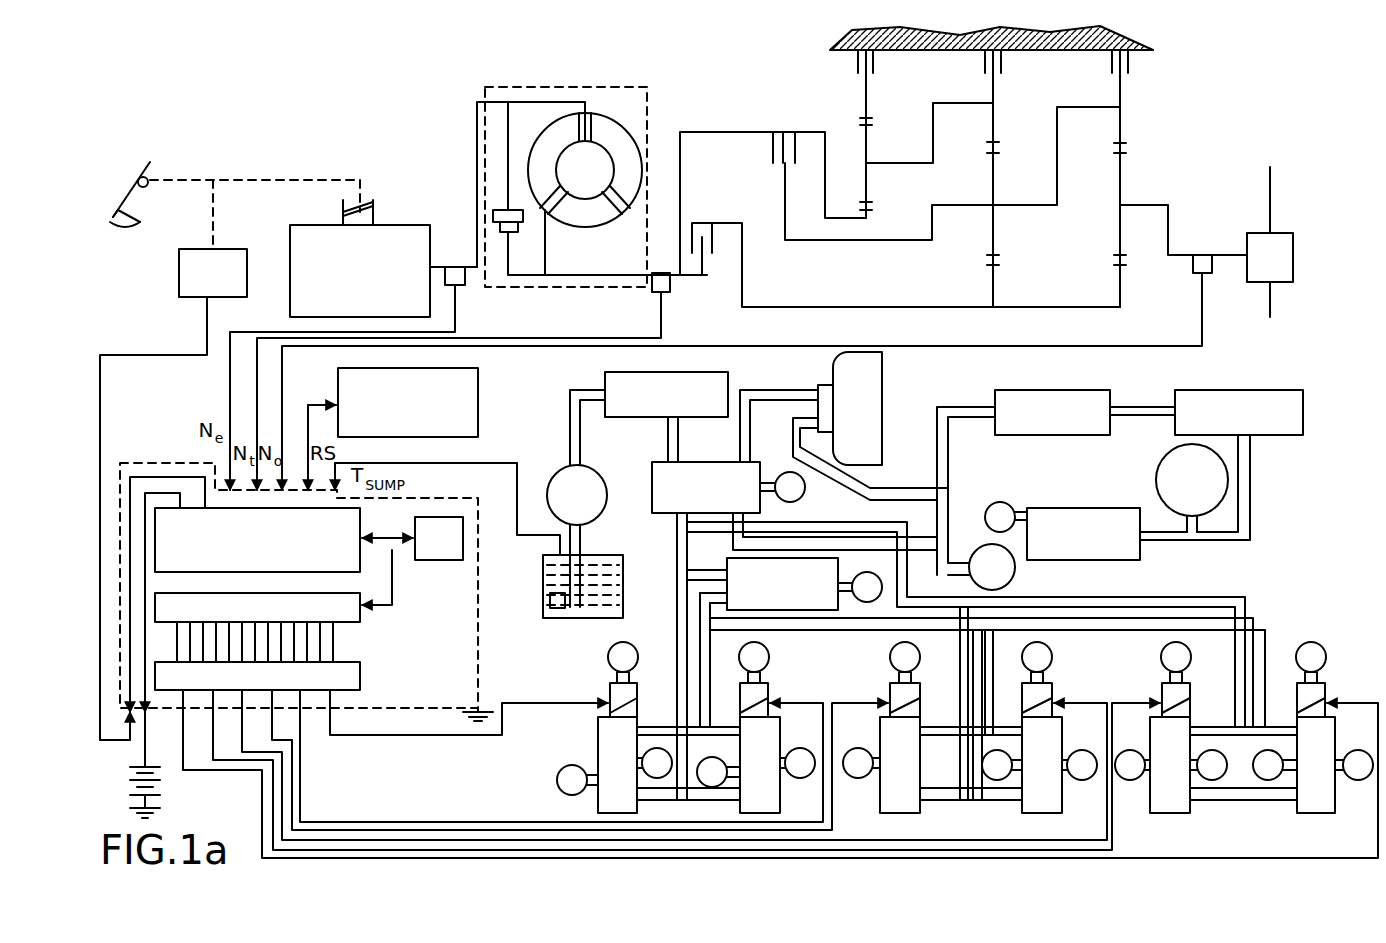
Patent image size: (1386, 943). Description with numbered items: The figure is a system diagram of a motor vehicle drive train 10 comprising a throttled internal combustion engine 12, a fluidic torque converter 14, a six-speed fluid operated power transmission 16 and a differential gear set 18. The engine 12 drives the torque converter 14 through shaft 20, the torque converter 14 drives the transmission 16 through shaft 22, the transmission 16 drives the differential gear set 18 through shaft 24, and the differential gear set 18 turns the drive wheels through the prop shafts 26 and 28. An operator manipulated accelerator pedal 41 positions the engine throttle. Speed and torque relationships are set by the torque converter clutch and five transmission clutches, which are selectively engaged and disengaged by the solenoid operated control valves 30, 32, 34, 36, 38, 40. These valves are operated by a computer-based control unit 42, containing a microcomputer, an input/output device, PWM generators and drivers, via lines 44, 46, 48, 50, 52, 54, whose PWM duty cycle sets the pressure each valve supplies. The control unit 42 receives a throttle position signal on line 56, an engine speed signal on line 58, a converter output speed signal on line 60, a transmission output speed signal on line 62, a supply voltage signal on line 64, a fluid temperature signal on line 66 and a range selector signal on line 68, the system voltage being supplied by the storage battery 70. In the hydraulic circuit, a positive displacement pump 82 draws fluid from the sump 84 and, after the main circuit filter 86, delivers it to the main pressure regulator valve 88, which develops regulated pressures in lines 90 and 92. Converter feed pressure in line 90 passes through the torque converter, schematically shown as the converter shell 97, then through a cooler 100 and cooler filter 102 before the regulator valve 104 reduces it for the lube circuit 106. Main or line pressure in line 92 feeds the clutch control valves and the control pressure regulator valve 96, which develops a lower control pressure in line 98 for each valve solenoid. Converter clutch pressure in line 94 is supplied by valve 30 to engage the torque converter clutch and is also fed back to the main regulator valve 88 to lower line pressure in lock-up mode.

The motor vehicle drive train 10 is at (395, 145).
The throttled internal combustion engine 12 is at (392, 233).
The fluidic torque converter 14 is at (508, 80).
The six-speed fluid operated power transmission 16 is at (770, 118).
The differential gear set 18 is at (1250, 272).
The shaft 20 is at (477, 247).
The shaft 22 is at (670, 292).
The shaft 24 is at (1168, 227).
The prop shaft 26 is at (1272, 190).
The prop shaft 28 is at (1272, 300).
The solenoid operated control valve 30 is at (875, 747).
The solenoid operated control valve 32 is at (593, 742).
The solenoid operated control valve 34 is at (780, 737).
The solenoid operated control valve 36 is at (1052, 790).
The solenoid operated control valve 38 is at (1168, 810).
The solenoid operated control valve 40 is at (1322, 807).
The accelerator pedal 41 is at (122, 175).
The computer-based control unit 42 is at (478, 598).
The line 44 is at (287, 748).
The line 46 is at (390, 737).
The line 48 is at (422, 823).
The line 50 is at (280, 770).
The line 52 is at (215, 718).
The line 54 is at (262, 818).
The line 56 is at (100, 470).
The line 58 is at (227, 358).
The line 60 is at (257, 408).
The line 62 is at (288, 382).
The line 64 is at (148, 745).
The line 66 is at (480, 457).
The line 68 is at (303, 437).
The storage battery 70 is at (140, 770).
The positive displacement pump 82 is at (602, 493).
The sump 84 is at (545, 608).
The main circuit filter 86 is at (647, 373).
The main pressure regulator valve 88 is at (733, 470).
The line 90 is at (773, 390).
The line 92 is at (680, 610).
The line 94 is at (798, 543).
The control pressure regulator valve 96 is at (787, 620).
The converter shell 97 is at (857, 388).
The line 98 is at (703, 670).
The cooler 100 is at (1047, 393).
The cooler filter 102 is at (1287, 407).
The regulator valve 104 is at (1127, 537).
The lube circuit 106 is at (1185, 460).